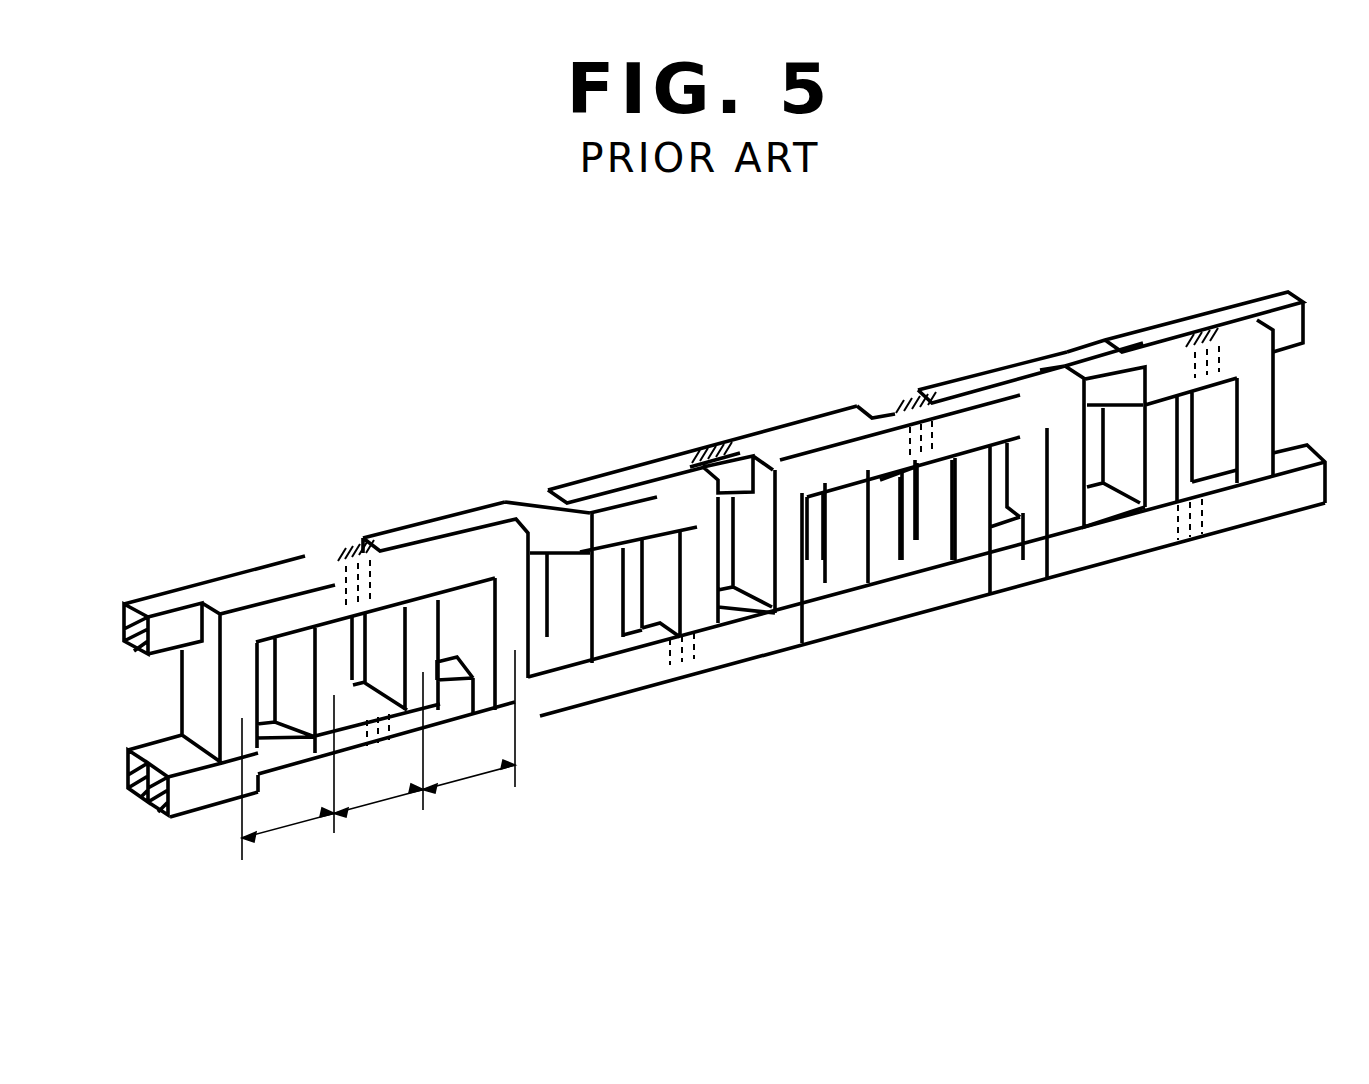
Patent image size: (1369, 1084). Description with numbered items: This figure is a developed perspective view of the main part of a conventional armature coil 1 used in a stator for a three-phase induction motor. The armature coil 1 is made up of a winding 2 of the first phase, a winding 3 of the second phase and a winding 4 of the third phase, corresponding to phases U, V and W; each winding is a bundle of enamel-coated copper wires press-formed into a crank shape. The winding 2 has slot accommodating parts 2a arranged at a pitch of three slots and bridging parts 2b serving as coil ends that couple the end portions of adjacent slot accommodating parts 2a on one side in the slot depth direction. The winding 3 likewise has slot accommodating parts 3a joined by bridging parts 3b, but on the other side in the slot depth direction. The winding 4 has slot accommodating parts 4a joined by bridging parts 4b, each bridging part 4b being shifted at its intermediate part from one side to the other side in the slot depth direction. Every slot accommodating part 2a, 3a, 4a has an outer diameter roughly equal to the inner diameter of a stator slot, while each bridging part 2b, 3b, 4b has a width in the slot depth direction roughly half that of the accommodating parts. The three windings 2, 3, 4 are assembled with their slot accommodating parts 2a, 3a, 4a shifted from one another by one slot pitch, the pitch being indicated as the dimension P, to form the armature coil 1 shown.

The armature coil 1 is at (240, 459).
The winding of the first phase 2 is at (637, 463).
The slot accommodating parts 2a is at (606, 598).
The bridging parts 2b is at (740, 452).
The winding of the second phase 3 is at (898, 413).
The slot accommodating parts 3a is at (788, 543).
The bridging parts 3b is at (1122, 568).
The winding of the third phase 4 is at (470, 513).
The slot accommodating parts 4a is at (697, 580).
The bridging parts 4b is at (925, 588).